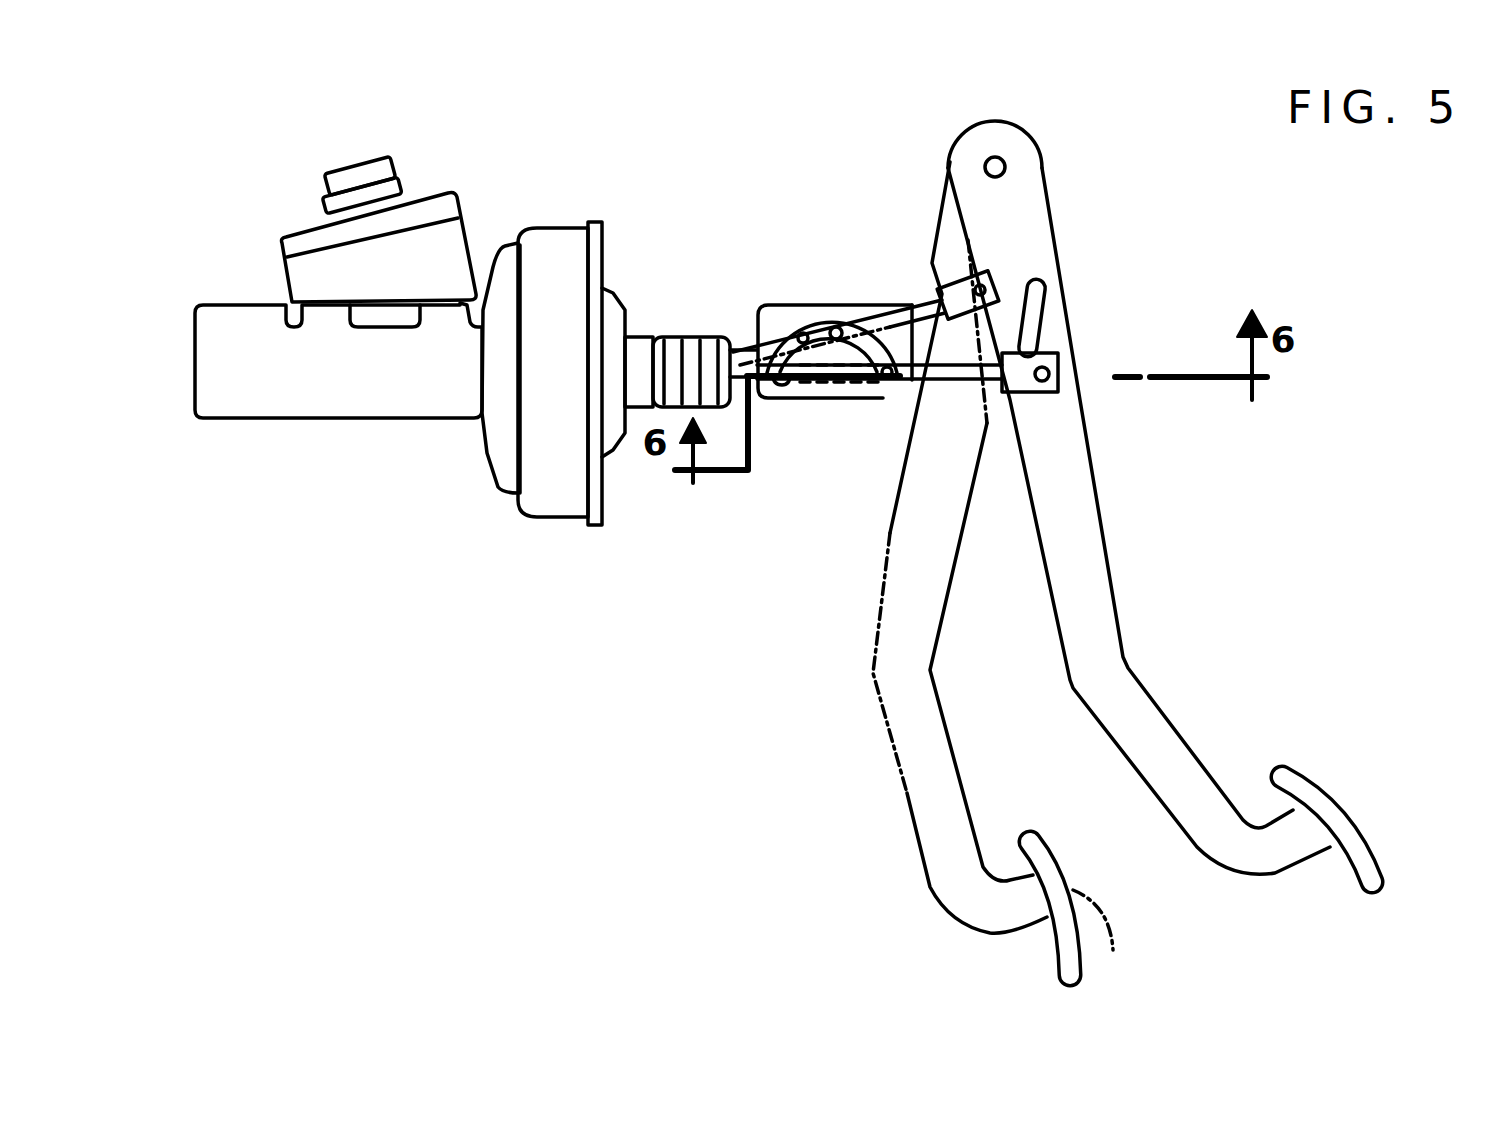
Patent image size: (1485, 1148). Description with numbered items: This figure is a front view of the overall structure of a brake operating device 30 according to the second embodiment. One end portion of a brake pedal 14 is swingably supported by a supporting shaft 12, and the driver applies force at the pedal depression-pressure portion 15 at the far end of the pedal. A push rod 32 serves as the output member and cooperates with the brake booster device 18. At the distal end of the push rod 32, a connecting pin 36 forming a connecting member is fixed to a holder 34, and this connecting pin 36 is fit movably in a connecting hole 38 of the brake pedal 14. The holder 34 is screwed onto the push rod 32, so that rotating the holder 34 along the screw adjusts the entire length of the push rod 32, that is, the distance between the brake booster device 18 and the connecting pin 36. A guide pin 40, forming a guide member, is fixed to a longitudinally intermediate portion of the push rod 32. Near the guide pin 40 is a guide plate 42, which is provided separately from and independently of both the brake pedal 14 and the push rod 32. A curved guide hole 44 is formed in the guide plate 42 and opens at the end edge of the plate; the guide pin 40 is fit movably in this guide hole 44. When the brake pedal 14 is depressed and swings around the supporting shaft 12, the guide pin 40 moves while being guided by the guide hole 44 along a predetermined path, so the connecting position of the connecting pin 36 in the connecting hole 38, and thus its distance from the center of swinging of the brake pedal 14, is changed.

The supporting shaft 12 is at (1006, 168).
The brake pedal 14 is at (1113, 593).
The pedal depression-pressure portion 15 is at (1357, 827).
The brake booster device 18 is at (550, 224).
The brake operating device 30 is at (744, 226).
The push rod 32 is at (916, 290).
The holder 34 is at (938, 252).
The connecting pin 36 is at (993, 282).
The connecting hole 38 is at (1042, 321).
The guide pin 40 is at (837, 327).
The guide plate 42 is at (787, 398).
The guide hole 44 is at (796, 334).